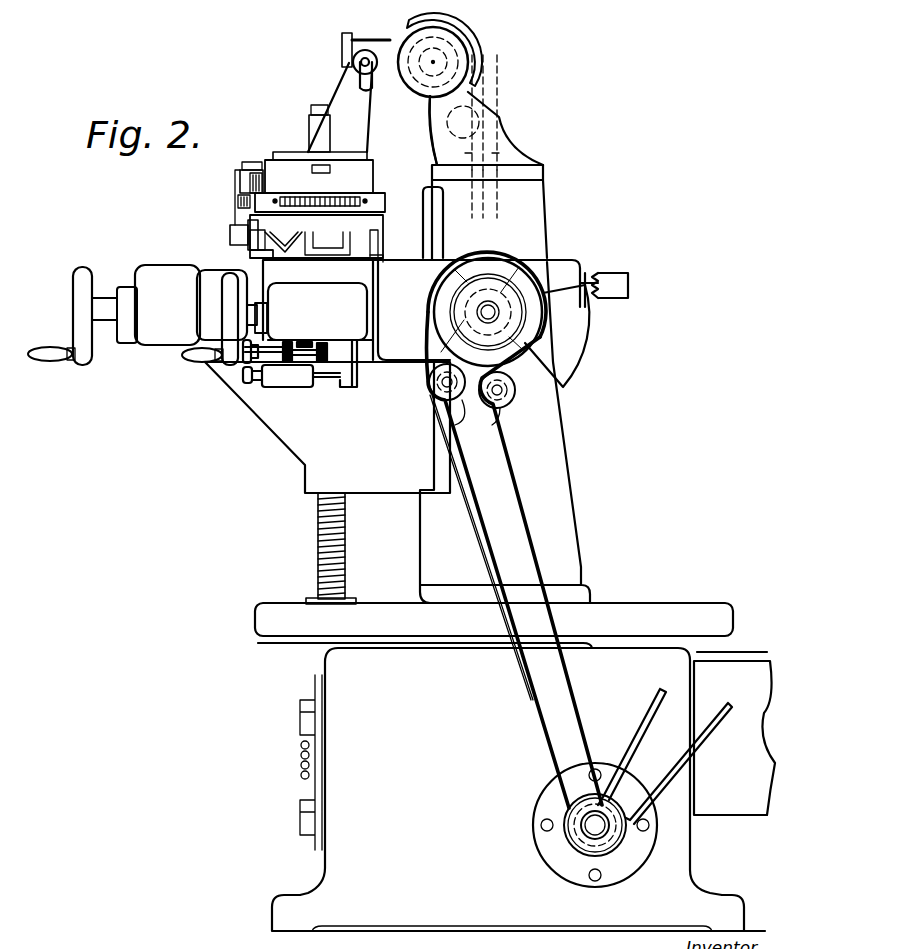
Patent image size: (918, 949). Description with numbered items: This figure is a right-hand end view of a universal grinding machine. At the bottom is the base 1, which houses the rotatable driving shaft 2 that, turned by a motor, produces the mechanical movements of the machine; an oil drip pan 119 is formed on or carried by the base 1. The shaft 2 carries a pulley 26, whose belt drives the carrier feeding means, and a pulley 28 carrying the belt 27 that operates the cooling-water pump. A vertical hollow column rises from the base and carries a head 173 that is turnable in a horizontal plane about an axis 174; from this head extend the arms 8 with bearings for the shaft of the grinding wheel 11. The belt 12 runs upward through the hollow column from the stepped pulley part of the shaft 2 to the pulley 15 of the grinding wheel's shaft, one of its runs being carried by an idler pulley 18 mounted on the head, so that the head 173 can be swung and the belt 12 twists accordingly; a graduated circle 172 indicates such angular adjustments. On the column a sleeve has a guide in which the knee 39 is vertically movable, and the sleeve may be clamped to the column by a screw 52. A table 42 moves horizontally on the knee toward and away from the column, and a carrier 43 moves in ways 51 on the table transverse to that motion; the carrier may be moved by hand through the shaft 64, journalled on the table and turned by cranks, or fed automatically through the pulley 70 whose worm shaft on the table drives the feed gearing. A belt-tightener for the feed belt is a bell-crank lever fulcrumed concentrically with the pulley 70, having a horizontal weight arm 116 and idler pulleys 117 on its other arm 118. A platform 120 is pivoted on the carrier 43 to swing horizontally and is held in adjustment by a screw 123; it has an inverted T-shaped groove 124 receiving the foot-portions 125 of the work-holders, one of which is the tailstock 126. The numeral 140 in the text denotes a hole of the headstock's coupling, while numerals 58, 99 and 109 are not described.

The base 1 is at (472, 772).
The shaft 2 is at (582, 840).
The arms 8 is at (462, 131).
The grinding wheel 11 is at (557, 38).
The belt 12 is at (477, 218).
The pulley 15 is at (412, 110).
The idler pulley 18 is at (424, 160).
The pulley 26 is at (617, 807).
The belt 27 is at (643, 728).
The pulley 28 is at (622, 843).
The knee 39 is at (327, 427).
The table 42 is at (191, 305).
The carrier 43 is at (316, 236).
The ways 51 is at (313, 262).
The screw 52 is at (365, 259).
The hand wheel 58 is at (78, 307).
The shaft 64 is at (617, 288).
The pulley 70 is at (493, 265).
The hand wheel 99 is at (230, 313).
The adjusting bolt 109 is at (240, 240).
The weight arm 116 is at (592, 340).
The idler pulleys 117 is at (480, 420).
The arm 118 is at (507, 377).
The oil drip pan 119 is at (478, 87).
The platform 120 is at (320, 182).
The screw 123 is at (258, 146).
The inverted T-shaped groove 124 is at (330, 178).
The foot-portions 125 is at (567, 515).
The tailstock 126 is at (357, 47).
The hole 140 is at (347, 533).
The graduated circle 172 is at (227, 213).
The head 173 is at (535, 175).
The axis 174 is at (585, 143).